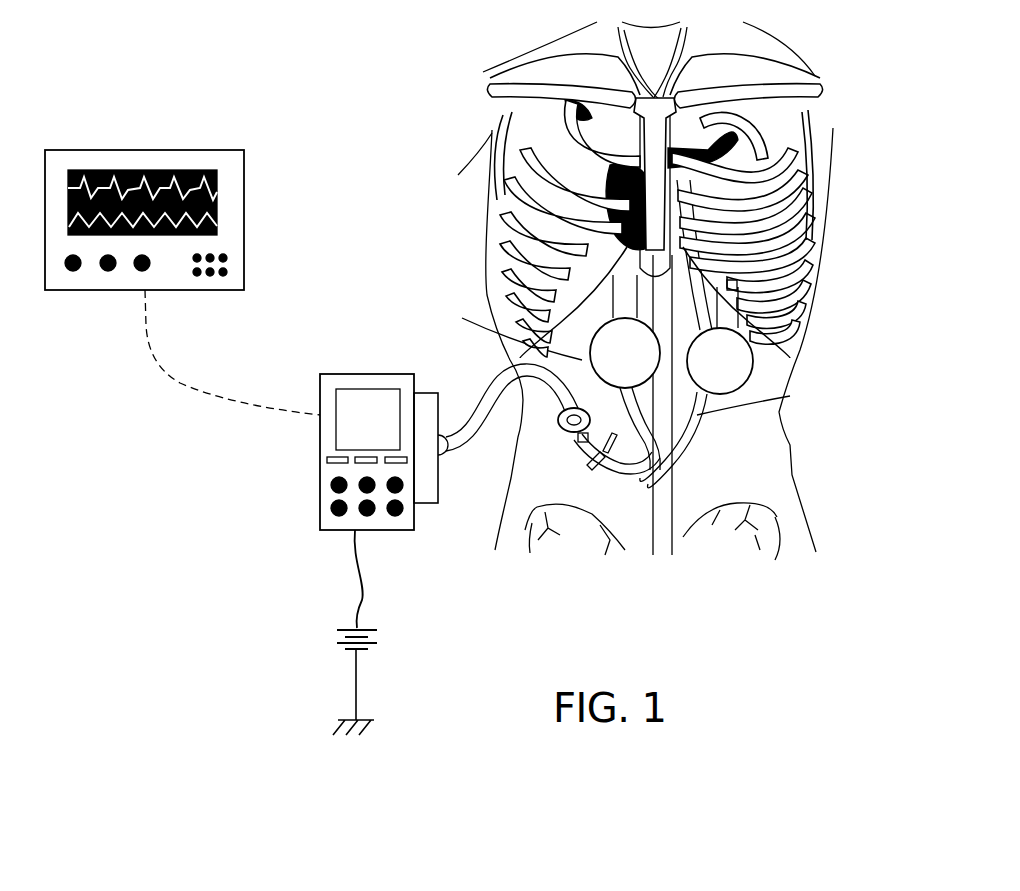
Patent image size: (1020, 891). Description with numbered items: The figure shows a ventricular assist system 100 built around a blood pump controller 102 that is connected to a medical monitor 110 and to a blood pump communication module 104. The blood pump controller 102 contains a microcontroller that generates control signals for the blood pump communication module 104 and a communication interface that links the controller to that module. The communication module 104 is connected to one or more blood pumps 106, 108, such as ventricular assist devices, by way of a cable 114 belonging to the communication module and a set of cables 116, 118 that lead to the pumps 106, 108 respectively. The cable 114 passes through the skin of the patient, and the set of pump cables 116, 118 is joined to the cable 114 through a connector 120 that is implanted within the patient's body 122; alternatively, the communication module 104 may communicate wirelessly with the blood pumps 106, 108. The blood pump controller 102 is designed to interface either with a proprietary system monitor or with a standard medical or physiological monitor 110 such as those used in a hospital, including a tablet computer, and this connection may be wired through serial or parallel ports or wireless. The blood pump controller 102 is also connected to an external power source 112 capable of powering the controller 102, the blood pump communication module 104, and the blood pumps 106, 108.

The ventricular assist system 100 is at (345, 97).
The blood pump controller 102 is at (320, 476).
The blood pump communication module 104 is at (430, 508).
The blood pump 106 is at (785, 380).
The blood pump 108 is at (518, 362).
The medical monitor 110 is at (172, 150).
The external power source 112 is at (333, 638).
The cable 114 is at (478, 405).
The cable 116 is at (780, 410).
The cable 118 is at (605, 443).
The connector 120 is at (572, 434).
The patient's body 122 is at (498, 177).